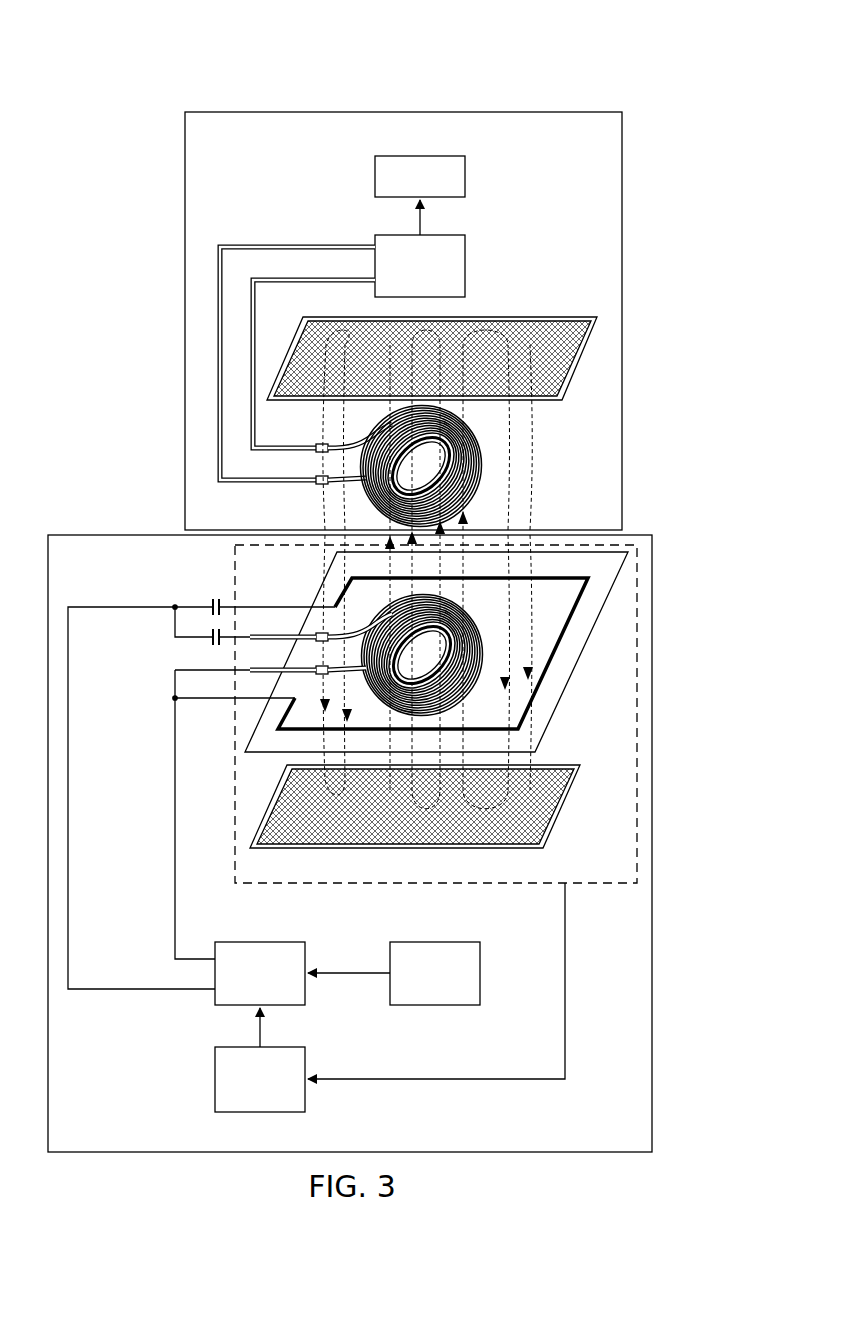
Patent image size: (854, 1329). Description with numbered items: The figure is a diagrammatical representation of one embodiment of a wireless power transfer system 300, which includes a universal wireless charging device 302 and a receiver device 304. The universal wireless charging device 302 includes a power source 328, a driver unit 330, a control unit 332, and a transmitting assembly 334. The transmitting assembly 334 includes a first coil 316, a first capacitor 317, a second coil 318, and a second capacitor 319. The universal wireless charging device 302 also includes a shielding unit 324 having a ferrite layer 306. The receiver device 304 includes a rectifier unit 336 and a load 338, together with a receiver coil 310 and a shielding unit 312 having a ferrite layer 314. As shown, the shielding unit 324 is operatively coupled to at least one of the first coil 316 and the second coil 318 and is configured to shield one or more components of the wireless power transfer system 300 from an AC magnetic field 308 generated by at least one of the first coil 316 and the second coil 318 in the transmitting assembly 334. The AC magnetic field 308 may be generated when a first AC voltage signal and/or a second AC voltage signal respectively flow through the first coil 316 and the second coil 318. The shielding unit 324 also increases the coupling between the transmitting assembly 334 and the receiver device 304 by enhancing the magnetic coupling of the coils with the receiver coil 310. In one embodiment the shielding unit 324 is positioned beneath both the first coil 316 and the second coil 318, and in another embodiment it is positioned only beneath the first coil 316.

The wireless power transfer system 300 is at (623, 63).
The universal wireless charging device 302 is at (82, 535).
The receiver device 304 is at (623, 211).
The ferrite layer 306 is at (570, 767).
The AC magnetic field 308 is at (528, 480).
The receiver coil 310 is at (478, 448).
The shielding unit 312 is at (594, 319).
The ferrite layer 314 is at (588, 357).
The first coil 316 is at (583, 577).
The first capacitor 317 is at (207, 604).
The second coil 318 is at (480, 628).
The second capacitor 319 is at (207, 642).
The shielding unit 324 is at (573, 788).
The power source 328 is at (482, 974).
The driver unit 330 is at (293, 1006).
The control unit 332 is at (213, 1080).
The transmitting assembly 334 is at (598, 883).
The rectifier unit 336 is at (466, 261).
The load 338 is at (466, 175).